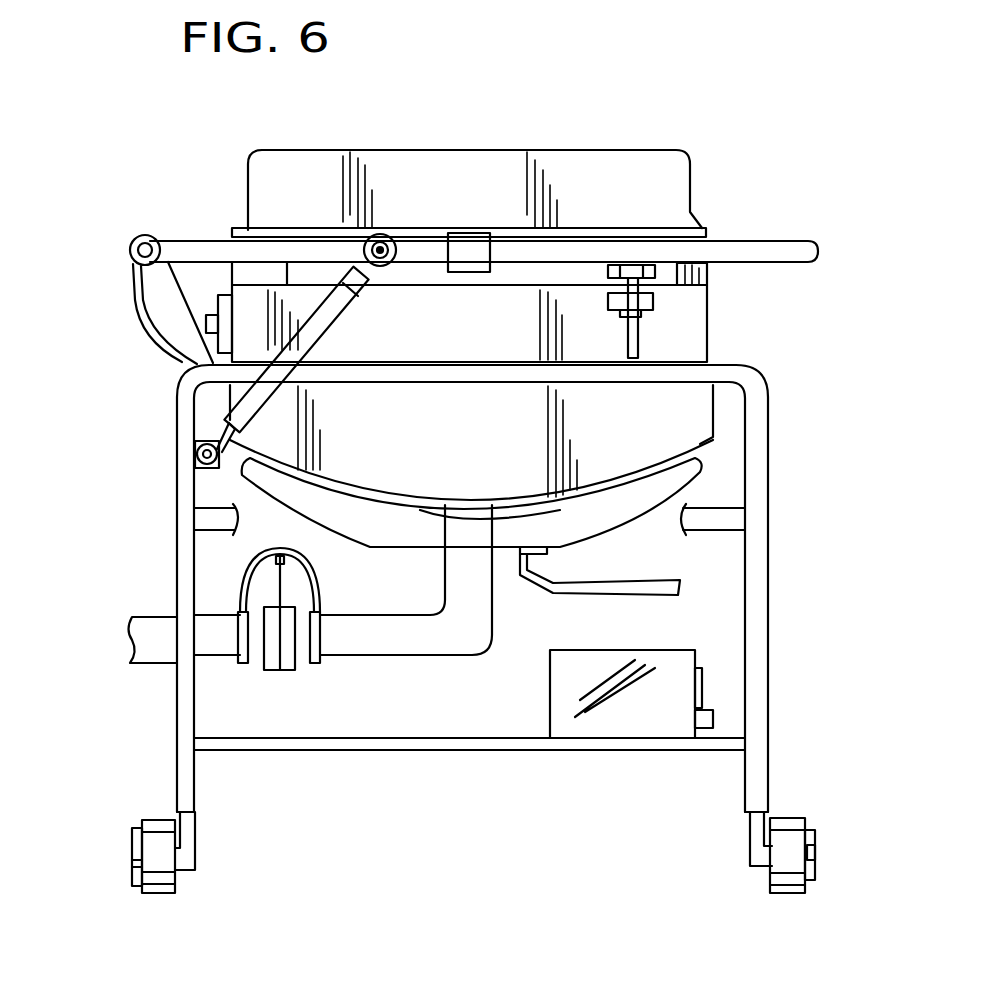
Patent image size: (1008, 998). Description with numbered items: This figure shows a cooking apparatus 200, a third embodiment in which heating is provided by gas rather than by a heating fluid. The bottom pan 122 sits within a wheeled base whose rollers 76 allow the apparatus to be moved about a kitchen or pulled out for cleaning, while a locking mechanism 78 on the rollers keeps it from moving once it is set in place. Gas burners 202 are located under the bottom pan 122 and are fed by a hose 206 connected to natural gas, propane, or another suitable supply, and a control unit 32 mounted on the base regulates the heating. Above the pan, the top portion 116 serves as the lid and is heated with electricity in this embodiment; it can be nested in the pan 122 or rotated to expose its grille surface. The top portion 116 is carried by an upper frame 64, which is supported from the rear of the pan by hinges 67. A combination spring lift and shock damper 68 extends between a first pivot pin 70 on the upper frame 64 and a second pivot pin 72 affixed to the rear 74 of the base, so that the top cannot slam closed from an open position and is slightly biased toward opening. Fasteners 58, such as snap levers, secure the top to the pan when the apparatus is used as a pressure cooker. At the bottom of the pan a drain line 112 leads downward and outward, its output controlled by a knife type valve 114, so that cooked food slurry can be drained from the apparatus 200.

The cooking apparatus 200 is at (608, 106).
The top portion 116 is at (637, 205).
The upper frame 64 is at (810, 249).
The hinges 67 is at (143, 235).
The first pivot pin 70 is at (386, 237).
The spring lift/shock damper 68 is at (337, 300).
The second pivot pin 72 is at (198, 454).
The fasteners 58 is at (653, 301).
The rear of base 74 is at (770, 657).
The bottom pan 122 is at (492, 480).
The gas burners 202 is at (590, 528).
The hose 206 is at (632, 592).
The bottom drain line 112 is at (440, 657).
The knife type valve 114 is at (281, 670).
The control unit 32 is at (548, 690).
The rollers 76 is at (160, 820).
The locking mechanism 78 is at (135, 838).